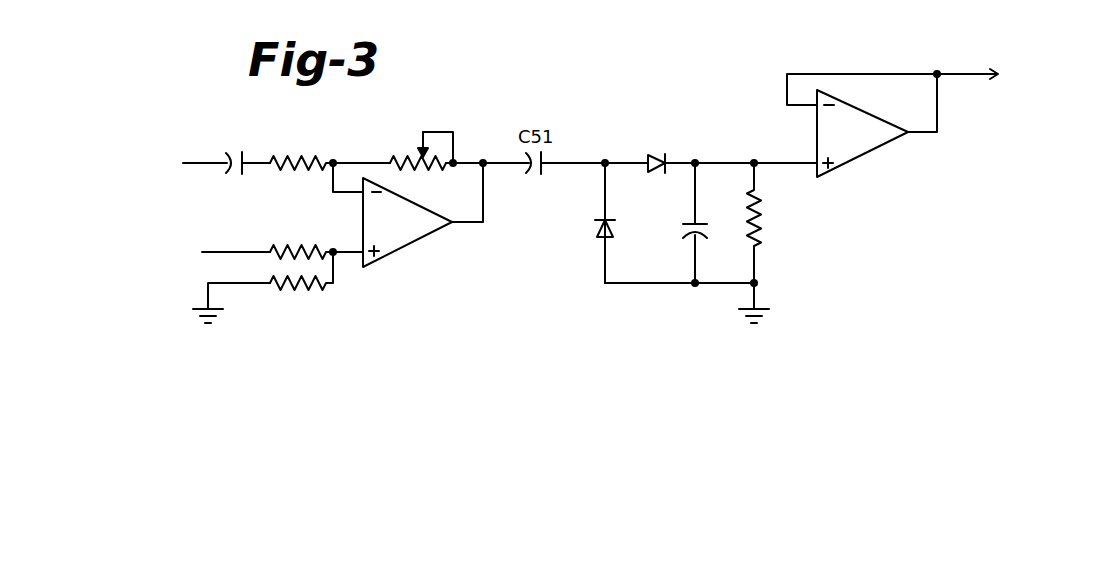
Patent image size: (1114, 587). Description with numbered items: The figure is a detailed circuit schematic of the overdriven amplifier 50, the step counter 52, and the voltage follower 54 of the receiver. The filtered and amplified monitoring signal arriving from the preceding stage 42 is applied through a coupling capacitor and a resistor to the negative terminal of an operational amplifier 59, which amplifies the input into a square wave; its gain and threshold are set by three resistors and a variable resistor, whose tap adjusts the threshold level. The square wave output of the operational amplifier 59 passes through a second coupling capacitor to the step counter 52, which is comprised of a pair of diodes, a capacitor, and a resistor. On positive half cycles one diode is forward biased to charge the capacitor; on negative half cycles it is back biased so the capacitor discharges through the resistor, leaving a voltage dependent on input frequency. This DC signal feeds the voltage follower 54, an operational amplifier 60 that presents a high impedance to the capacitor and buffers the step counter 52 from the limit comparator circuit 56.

The preceding stage (signal source) 42 is at (152, 164).
The overdriven amplifier 50 is at (344, 256).
The step counter 52 is at (783, 323).
The voltage follower 54 is at (900, 118).
The limit comparator circuit 56 is at (998, 74).
The operational amplifier 59 is at (423, 215).
The operational amplifier 60 is at (863, 124).